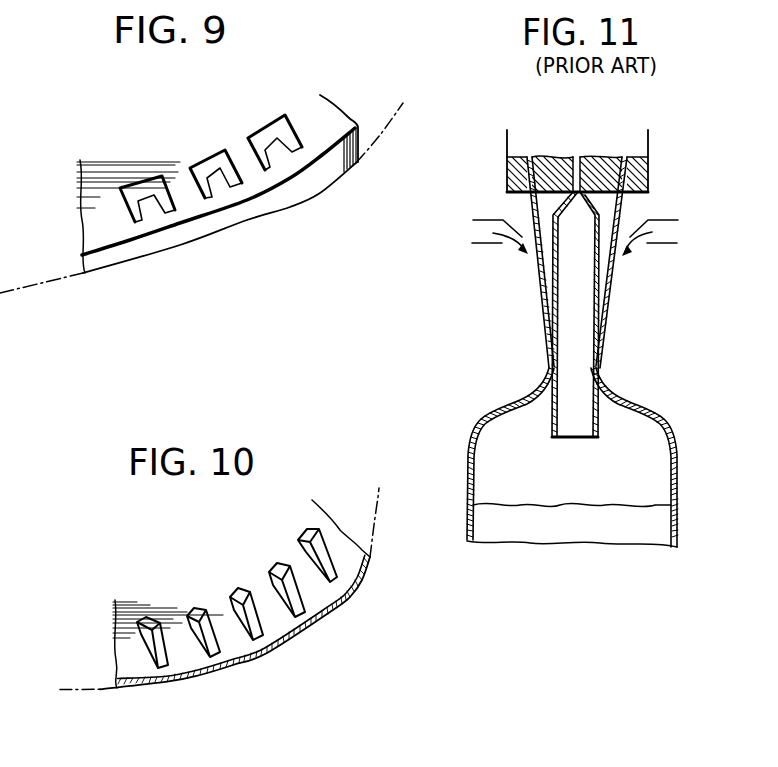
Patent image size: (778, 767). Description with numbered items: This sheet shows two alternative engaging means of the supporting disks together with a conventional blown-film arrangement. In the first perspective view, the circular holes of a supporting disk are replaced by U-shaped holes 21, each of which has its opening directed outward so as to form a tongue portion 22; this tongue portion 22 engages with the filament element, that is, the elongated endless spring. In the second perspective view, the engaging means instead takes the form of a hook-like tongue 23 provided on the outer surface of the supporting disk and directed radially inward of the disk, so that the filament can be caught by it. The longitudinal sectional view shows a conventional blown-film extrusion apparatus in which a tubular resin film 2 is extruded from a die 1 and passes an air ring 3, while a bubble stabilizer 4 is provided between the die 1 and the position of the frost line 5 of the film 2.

In FIG. 9, the U-shaped hole 21 is at (142, 190).
In FIG. 9, the tongue portion 22 is at (145, 202).
In FIG. 10, the hook-like tongue 23 is at (196, 609).
In FIG. 11, the die 1 is at (607, 160).
In FIG. 11, the tubular resin film 2 is at (540, 287).
In FIG. 11, the air ring 3 is at (667, 220).
In FIG. 11, the bubble stabilizer 4 is at (600, 283).
In FIG. 11, the frost line 5 is at (510, 500).